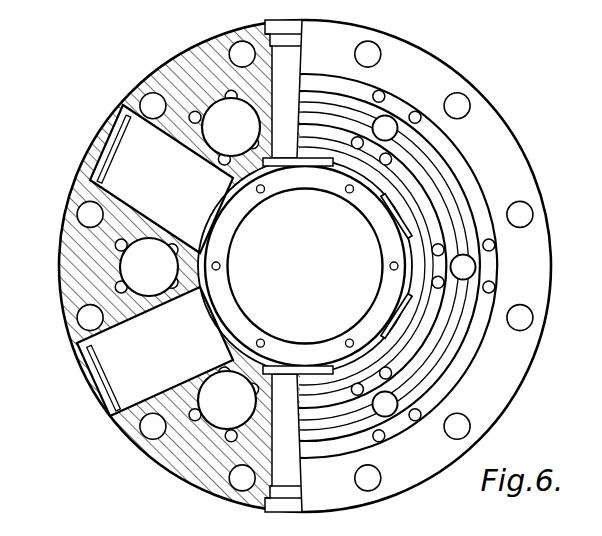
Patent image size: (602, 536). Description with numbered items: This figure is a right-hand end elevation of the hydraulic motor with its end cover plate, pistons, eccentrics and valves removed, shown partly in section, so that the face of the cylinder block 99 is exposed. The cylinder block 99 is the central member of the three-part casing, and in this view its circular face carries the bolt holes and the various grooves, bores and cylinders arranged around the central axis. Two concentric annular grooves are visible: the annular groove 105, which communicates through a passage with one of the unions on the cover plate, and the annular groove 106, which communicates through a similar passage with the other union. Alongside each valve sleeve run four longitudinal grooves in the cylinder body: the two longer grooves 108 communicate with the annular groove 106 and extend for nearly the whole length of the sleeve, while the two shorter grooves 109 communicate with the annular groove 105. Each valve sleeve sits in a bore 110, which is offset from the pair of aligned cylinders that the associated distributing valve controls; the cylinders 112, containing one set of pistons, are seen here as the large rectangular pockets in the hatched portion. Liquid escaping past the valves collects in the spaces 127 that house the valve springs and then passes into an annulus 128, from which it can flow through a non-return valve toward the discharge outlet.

The cylinder block 99 is at (169, 463).
The annular groove 105 is at (420, 212).
The annular groove 106 is at (475, 186).
The longitudinal grooves 108 is at (387, 96).
The longitudinal grooves 109 is at (362, 142).
The bore 110 is at (254, 181).
The cylinders 112 is at (190, 160).
The spaces 127 is at (380, 122).
The annulus 128 is at (423, 373).